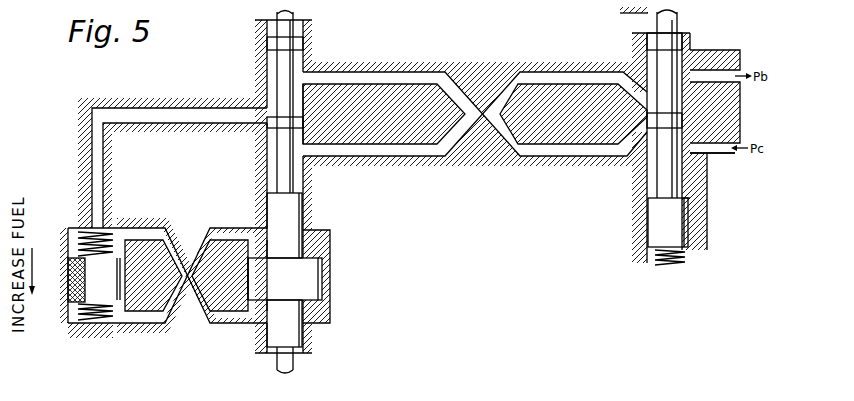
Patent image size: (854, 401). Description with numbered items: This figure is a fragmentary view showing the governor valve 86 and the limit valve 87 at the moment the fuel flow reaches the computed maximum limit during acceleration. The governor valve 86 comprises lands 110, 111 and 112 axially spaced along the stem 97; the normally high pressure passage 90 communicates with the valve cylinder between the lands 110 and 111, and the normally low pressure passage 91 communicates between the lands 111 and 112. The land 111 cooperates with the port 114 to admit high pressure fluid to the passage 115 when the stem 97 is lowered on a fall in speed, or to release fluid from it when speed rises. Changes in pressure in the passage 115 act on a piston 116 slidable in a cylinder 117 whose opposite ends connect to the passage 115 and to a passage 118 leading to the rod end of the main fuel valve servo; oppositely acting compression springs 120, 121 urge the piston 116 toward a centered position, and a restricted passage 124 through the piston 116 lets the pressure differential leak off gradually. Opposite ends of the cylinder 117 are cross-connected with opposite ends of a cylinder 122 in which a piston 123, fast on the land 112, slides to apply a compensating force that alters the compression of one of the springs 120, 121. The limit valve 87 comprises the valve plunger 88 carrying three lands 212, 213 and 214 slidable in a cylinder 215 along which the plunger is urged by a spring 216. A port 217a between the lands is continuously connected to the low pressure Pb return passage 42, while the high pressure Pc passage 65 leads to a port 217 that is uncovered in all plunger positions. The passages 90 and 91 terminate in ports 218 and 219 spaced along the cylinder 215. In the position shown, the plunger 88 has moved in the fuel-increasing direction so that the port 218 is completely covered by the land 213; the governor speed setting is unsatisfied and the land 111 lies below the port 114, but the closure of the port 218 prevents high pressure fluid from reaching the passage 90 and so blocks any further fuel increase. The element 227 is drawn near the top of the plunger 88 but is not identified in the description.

The governor valve 86 is at (254, 95).
The stem 97 is at (287, 63).
The land 110 is at (307, 38).
The land 111 is at (304, 122).
The land 112 is at (303, 200).
The port 114 is at (253, 120).
The passage 115 is at (150, 122).
The piston 116 is at (118, 276).
The cylinder 117 is at (72, 326).
The passage 118 is at (100, 343).
The compression spring 120 is at (113, 230).
The compression spring 121 is at (113, 324).
The cylinder 122 is at (320, 242).
The piston 123 is at (312, 276).
The restricted passage 124 is at (68, 293).
The passage 90 is at (413, 72).
The passage 91 is at (385, 157).
The limit valve 87 is at (594, 188).
The valve plunger 88 is at (663, 182).
The land 212 is at (688, 42).
The intermediate land 213 is at (690, 125).
The land 214 is at (688, 228).
The cylinder 215 is at (686, 186).
The spring 216 is at (680, 258).
The port 217 is at (700, 153).
The port 217a is at (715, 55).
The port 218 is at (640, 119).
The port 219 is at (640, 100).
The lever 227 is at (640, 20).
The fluid return passage 42 is at (720, 96).
The high pressure passage 65 is at (720, 126).